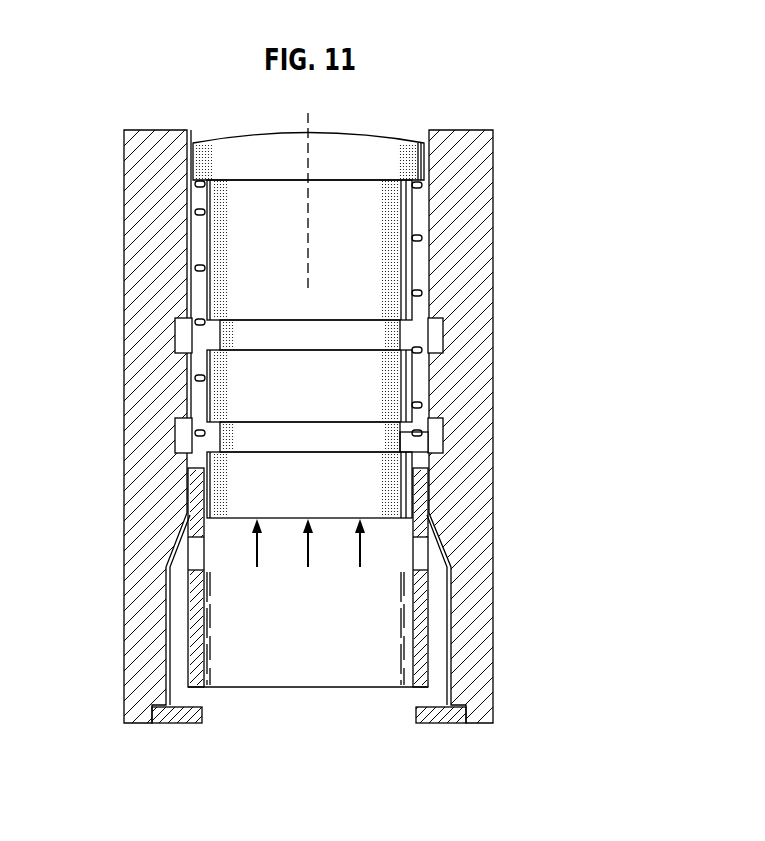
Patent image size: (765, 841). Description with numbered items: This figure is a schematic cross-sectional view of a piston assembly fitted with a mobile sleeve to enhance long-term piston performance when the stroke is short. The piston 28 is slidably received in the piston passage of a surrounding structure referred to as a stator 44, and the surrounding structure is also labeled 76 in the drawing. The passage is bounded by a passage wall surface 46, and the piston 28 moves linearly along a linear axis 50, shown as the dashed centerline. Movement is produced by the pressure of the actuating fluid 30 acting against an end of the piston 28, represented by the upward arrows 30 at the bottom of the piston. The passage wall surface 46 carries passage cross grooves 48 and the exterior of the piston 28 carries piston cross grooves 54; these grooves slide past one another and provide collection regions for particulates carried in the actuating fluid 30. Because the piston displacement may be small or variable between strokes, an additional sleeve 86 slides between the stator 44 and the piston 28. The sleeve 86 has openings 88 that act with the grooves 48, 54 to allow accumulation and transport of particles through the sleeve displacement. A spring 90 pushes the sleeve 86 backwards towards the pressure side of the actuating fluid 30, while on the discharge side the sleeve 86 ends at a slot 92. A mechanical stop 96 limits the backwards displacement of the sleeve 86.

The piston 28 is at (256, 138).
The actuating fluid 30 is at (257, 553).
The stator 44 is at (166, 184).
The passage wall surface 46 is at (190, 226).
The passage cross grooves 48 is at (443, 340).
The linear axis 50 is at (310, 240).
The piston cross grooves 54 is at (222, 345).
The housing wall 76 is at (464, 107).
The sleeve 86 is at (182, 630).
The openings 88 is at (420, 553).
The spring 90 is at (422, 238).
The slot 92 is at (412, 444).
The mechanical stop 96 is at (203, 715).